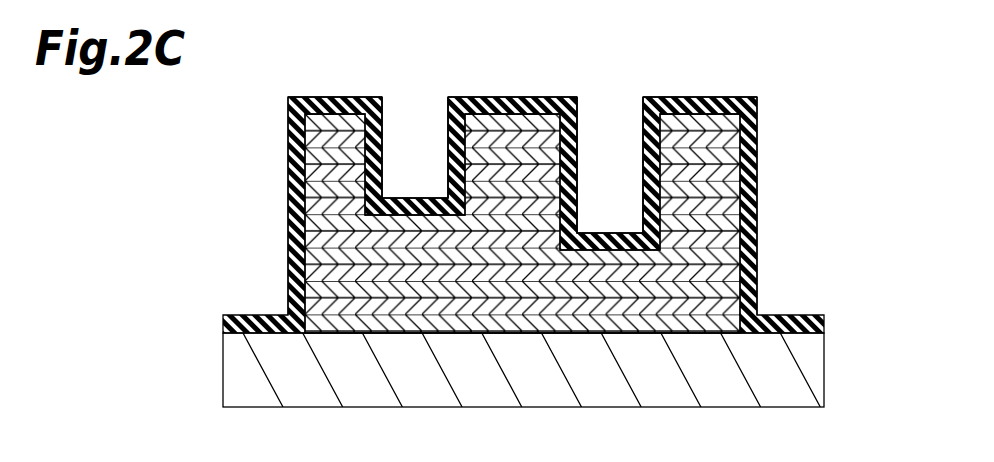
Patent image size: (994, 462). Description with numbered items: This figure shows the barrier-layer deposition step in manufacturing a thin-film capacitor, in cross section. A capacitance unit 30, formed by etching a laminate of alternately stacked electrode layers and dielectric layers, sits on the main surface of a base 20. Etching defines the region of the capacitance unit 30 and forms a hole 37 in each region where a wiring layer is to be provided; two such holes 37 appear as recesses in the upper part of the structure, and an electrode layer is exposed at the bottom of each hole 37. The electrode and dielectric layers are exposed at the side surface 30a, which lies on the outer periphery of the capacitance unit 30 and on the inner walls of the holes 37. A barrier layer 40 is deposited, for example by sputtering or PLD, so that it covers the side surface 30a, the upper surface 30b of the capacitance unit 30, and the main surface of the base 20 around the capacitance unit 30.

The base 20 is at (813, 378).
The capacitance unit 30 is at (745, 160).
The side surface 30a is at (290, 165).
The upper surface 30b is at (340, 105).
The hole 37 is at (410, 128).
The barrier layer 40 is at (745, 100).